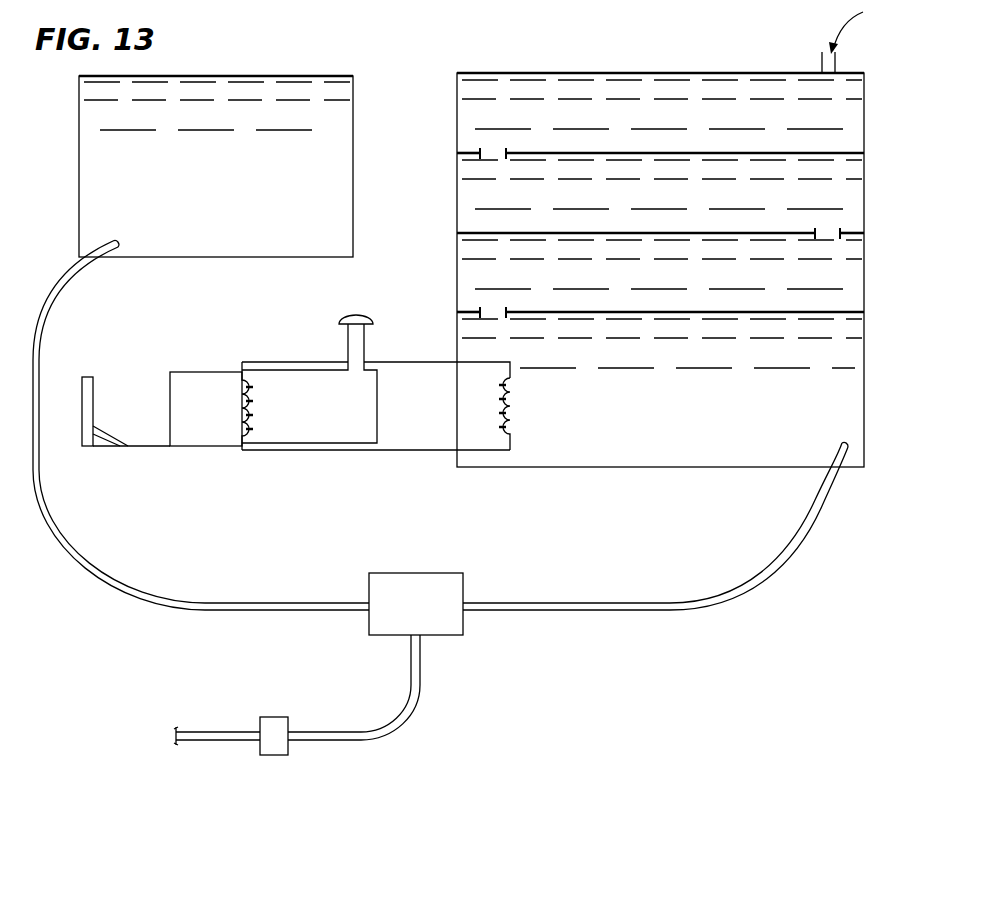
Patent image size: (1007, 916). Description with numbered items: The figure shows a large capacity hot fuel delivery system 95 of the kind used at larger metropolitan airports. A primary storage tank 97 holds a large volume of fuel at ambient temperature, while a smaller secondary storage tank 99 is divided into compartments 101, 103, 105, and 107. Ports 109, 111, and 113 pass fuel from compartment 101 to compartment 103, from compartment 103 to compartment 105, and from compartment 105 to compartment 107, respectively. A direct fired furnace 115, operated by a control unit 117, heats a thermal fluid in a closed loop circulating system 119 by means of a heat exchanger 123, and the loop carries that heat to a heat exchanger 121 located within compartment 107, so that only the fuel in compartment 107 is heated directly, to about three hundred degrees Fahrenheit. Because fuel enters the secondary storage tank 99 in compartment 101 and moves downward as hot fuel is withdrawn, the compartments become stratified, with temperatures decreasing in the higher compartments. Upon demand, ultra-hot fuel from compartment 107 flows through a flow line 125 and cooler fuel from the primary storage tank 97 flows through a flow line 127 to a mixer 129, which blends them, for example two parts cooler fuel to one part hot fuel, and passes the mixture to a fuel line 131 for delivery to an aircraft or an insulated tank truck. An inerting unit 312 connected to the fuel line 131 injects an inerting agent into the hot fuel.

The hot fuel delivery system 95 is at (178, 638).
The primary storage tank 97 is at (345, 125).
The secondary storage tank 99 is at (462, 108).
The compartment 101 is at (852, 127).
The compartment 103 is at (850, 195).
The compartment 105 is at (852, 297).
The compartment 107 is at (852, 403).
The port 109 is at (497, 152).
The port 111 is at (827, 228).
The port 113 is at (497, 310).
The furnace 115 is at (200, 376).
The control unit 117 is at (93, 386).
The closed loop circulating system 119 is at (383, 404).
The heat exchanger 121 is at (507, 407).
The heat exchanger 123 is at (244, 402).
The flow line 125 is at (828, 502).
The flow line 127 is at (111, 570).
The mixer 129 is at (455, 572).
The fuel line 131 is at (226, 735).
The inerting unit 312 is at (272, 722).